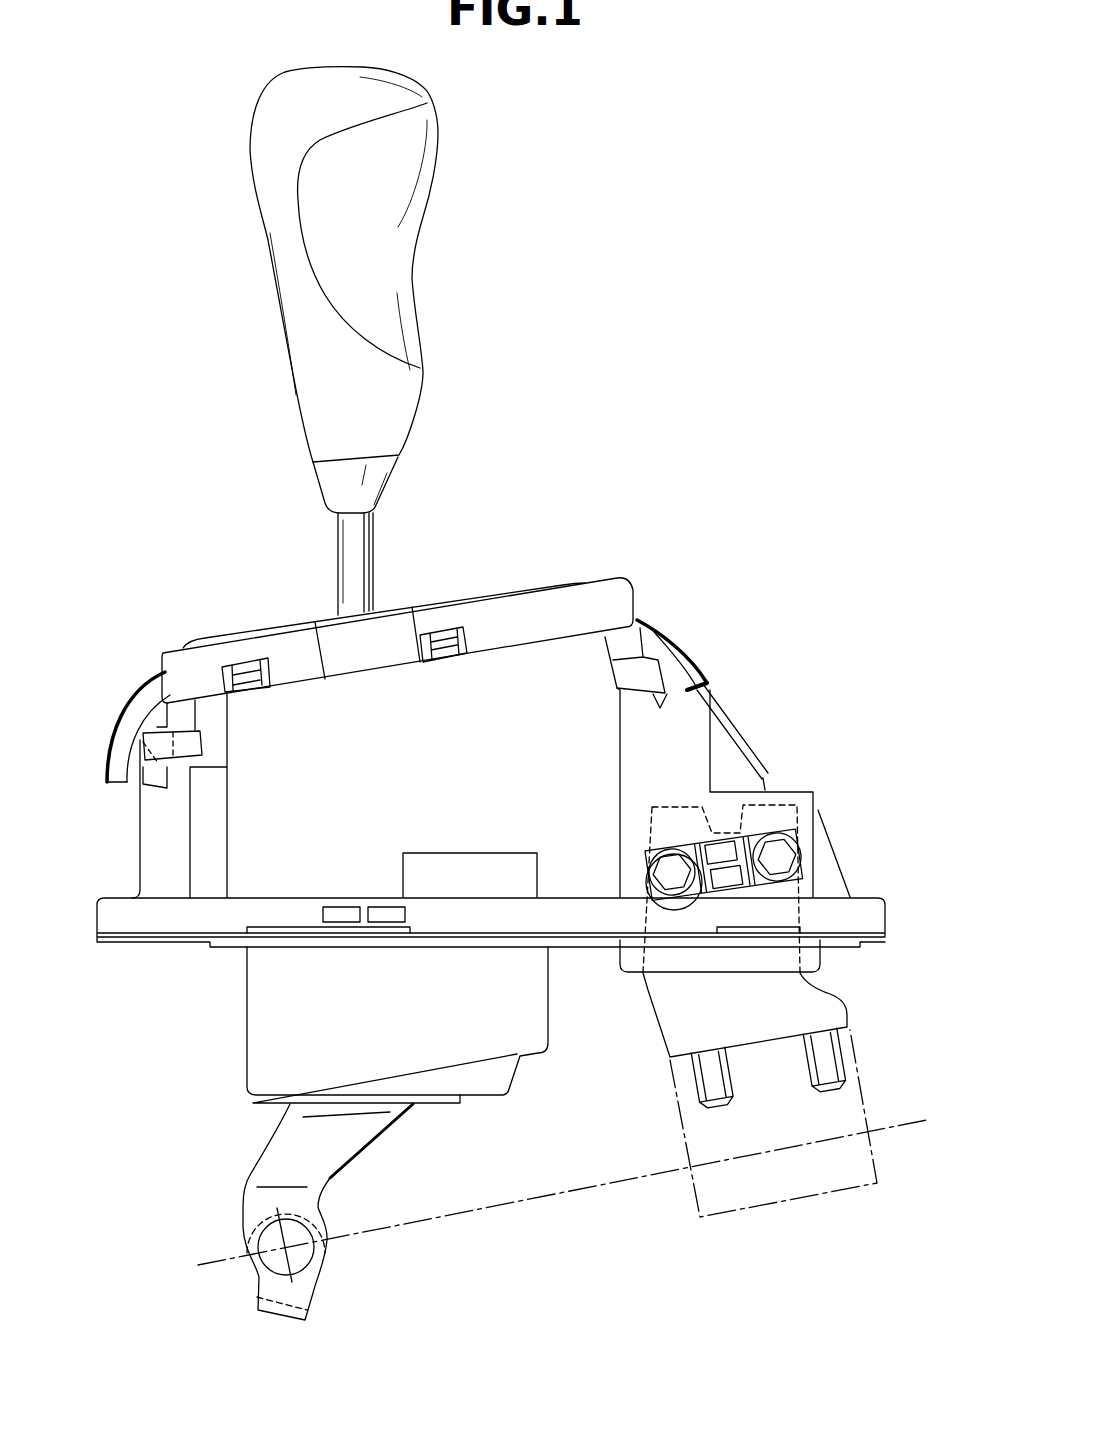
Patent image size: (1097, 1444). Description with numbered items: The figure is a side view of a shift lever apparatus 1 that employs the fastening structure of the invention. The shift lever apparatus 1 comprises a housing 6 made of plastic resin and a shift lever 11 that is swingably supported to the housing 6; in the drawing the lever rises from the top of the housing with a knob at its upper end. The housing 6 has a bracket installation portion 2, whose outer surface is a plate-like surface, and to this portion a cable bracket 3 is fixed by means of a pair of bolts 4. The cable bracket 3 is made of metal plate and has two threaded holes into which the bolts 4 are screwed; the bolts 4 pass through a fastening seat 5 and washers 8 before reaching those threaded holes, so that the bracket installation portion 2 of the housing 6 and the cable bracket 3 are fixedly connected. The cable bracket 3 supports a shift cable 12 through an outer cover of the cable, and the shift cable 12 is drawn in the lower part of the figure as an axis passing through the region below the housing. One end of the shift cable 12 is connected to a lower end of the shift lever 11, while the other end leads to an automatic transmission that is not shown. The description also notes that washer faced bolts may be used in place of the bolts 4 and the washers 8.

The shift lever apparatus 1 is at (586, 449).
The bracket installation portion 2 is at (693, 800).
The cable bracket 3 is at (667, 1013).
The bolts 4 is at (780, 847).
The fastening seat 5 is at (757, 830).
The housing 6 is at (473, 757).
The washers 8 is at (667, 870).
The shift lever 11 is at (373, 560).
The shift cable 12 is at (546, 1200).